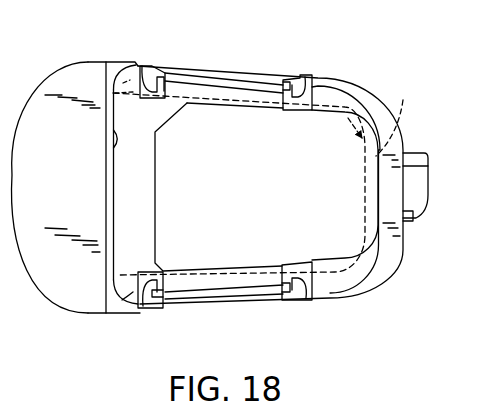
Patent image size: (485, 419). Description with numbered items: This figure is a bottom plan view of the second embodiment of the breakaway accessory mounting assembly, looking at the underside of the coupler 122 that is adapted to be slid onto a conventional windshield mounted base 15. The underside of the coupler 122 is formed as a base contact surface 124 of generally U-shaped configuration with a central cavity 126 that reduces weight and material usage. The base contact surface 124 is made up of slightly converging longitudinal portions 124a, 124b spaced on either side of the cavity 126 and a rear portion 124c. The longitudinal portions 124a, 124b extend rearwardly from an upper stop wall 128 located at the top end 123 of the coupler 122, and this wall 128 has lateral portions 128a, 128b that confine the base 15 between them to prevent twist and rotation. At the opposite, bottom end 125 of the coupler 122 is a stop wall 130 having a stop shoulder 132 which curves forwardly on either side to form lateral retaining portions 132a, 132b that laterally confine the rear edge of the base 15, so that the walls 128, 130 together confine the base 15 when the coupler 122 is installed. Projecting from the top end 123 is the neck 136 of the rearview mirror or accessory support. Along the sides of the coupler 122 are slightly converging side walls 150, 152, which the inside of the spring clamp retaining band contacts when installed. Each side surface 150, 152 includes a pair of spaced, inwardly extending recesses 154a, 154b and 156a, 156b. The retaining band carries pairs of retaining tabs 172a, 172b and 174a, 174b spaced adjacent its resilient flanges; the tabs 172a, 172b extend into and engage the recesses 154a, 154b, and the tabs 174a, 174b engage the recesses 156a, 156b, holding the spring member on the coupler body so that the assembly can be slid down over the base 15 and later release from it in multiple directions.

The windshield mounted base 15 is at (410, 91).
The coupler 122 is at (374, 90).
The top end 123 is at (403, 252).
The base contact surface 124 is at (150, 171).
The longitudinal portion 124a is at (259, 104).
The longitudinal portion 124b is at (278, 262).
The rear portion 124c is at (146, 201).
The bottom end 125 is at (13, 226).
The central cavity 126 is at (208, 106).
The upper stop wall 128 is at (378, 189).
The lateral portion 128a is at (322, 82).
The lateral portion 128b is at (333, 300).
The stop wall 130 is at (78, 198).
The stop shoulder 132 is at (106, 140).
The lateral retaining portion 132a is at (118, 62).
The lateral retaining portion 132b is at (121, 304).
The neck 136 is at (416, 226).
The side wall 150 is at (160, 75).
The side wall 152 is at (193, 300).
The recess 154a is at (263, 95).
The recess 154b is at (188, 72).
The recess 156a is at (307, 300).
The recess 156b is at (148, 304).
The retaining tab 172a is at (303, 95).
The retaining tab 172b is at (149, 72).
The retaining tab 174a is at (293, 258).
The retaining tab 174b is at (157, 294).